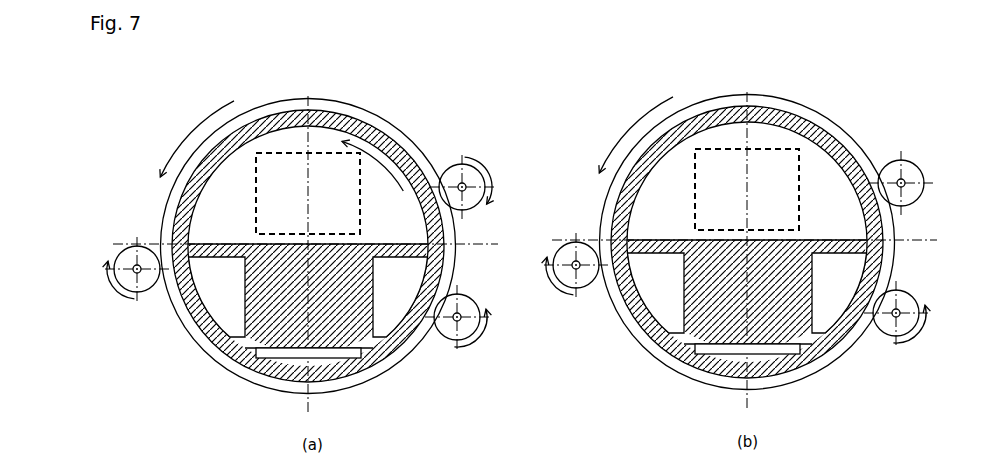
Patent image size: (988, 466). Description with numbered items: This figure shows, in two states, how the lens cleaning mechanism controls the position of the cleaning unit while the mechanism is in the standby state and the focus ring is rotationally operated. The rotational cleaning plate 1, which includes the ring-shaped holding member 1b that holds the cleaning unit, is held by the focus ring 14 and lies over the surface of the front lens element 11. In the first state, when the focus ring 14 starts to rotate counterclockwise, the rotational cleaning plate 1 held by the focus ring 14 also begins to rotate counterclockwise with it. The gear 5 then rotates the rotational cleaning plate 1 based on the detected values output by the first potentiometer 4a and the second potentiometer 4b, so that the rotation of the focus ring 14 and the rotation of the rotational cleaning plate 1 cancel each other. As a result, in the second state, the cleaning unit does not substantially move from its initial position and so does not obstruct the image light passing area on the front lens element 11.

The rotational cleaning plate 1 is at (333, 297).
The holding member 1b is at (320, 353).
The front lens element 11 is at (237, 197).
The focus ring 14 is at (387, 125).
The first potentiometer 4a is at (137, 265).
The second potentiometer 4b is at (460, 180).
The gear 5 is at (462, 317).